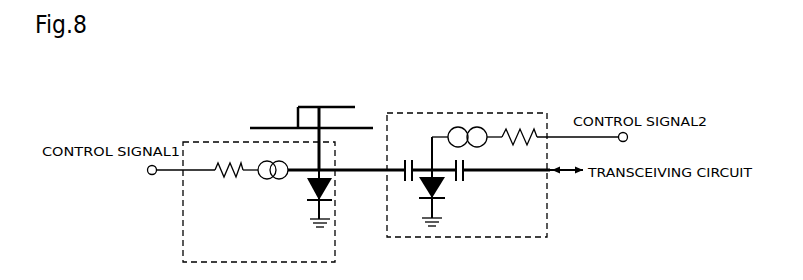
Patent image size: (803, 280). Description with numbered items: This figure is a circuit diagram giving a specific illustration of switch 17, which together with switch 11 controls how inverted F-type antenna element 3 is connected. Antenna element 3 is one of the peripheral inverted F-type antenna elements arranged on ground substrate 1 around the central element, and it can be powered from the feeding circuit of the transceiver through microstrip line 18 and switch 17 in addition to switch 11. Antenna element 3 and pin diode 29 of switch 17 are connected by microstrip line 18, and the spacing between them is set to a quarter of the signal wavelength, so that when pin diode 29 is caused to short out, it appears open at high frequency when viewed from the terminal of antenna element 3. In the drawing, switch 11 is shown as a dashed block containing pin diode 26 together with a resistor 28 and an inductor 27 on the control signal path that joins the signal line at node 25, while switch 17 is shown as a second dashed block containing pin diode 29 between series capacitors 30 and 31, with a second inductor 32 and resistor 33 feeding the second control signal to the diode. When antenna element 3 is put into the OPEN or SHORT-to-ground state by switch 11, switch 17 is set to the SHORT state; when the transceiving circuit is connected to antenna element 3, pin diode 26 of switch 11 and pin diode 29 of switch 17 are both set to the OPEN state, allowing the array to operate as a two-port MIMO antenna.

The ground substrate 1 is at (285, 128).
The inverted F-type antenna element 3 is at (315, 107).
The switch 11 is at (208, 142).
The switch 17 is at (413, 113).
The microstrip line 18 is at (370, 168).
The connection node 25 is at (317, 162).
The pin diode 26 is at (310, 195).
The inductor 27 is at (273, 183).
The resistor 28 is at (228, 178).
The pin diode 29 is at (423, 193).
The first capacitor 30 is at (406, 182).
The second capacitor 31 is at (460, 183).
The inductor 32 is at (467, 137).
The resistor 33 is at (518, 137).